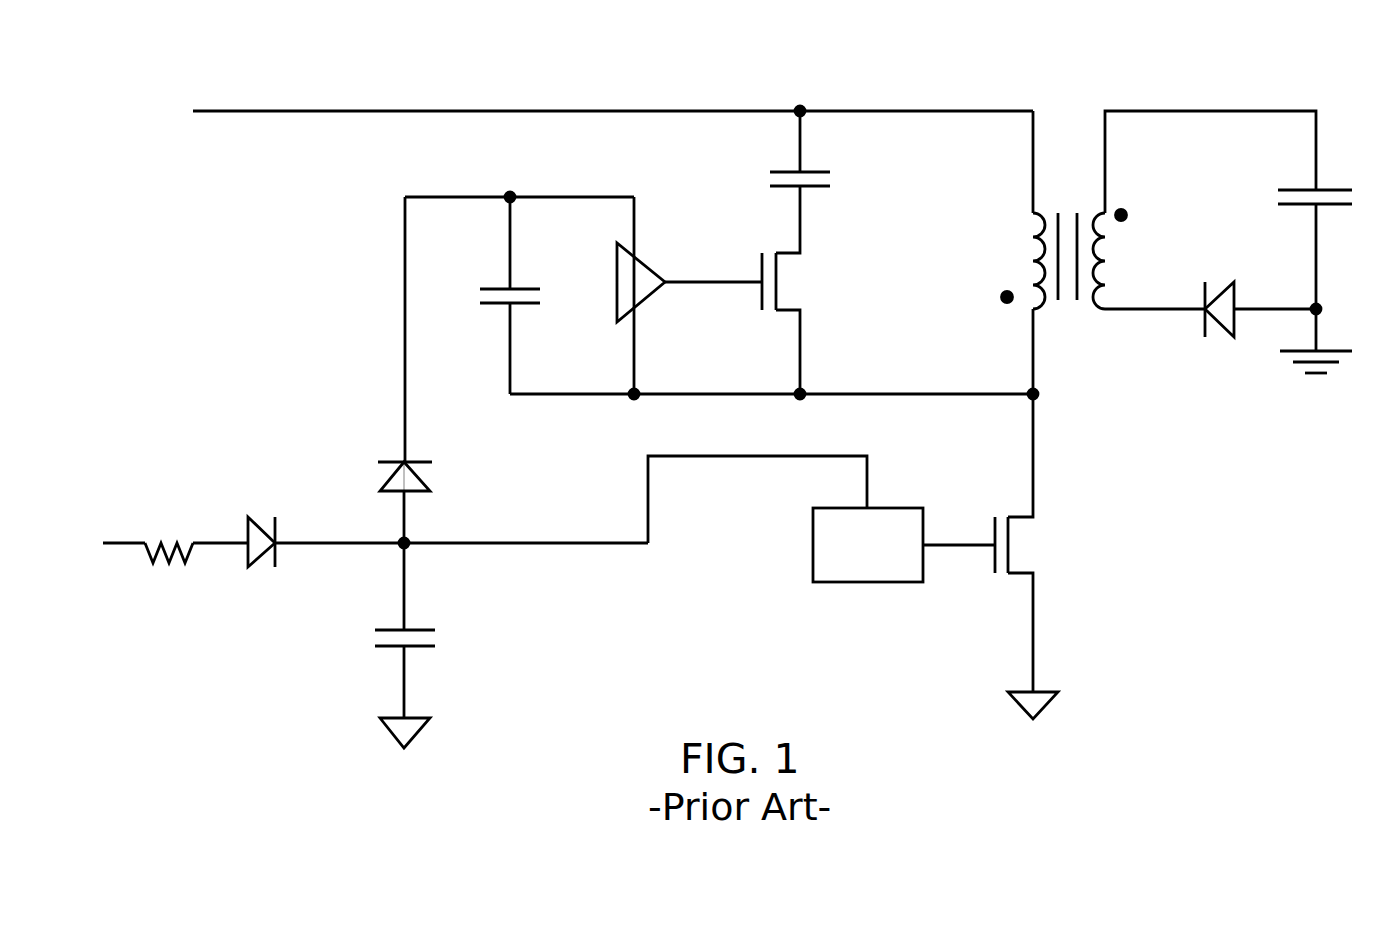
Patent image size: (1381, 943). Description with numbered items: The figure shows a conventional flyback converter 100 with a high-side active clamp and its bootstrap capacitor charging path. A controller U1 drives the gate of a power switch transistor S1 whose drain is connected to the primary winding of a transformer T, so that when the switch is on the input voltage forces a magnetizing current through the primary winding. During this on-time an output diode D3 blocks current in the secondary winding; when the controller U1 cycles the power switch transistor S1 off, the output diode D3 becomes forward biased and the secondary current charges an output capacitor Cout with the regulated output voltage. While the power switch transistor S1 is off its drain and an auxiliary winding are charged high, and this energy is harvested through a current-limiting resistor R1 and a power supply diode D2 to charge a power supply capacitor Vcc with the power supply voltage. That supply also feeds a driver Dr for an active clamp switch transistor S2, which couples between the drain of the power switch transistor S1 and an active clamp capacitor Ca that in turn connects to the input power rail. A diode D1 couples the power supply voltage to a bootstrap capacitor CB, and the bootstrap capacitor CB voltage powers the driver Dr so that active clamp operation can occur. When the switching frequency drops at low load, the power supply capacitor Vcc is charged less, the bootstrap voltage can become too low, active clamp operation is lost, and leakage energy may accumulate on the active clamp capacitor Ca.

The flyback converter 100 is at (838, 50).
The current-limiting resistor R1 is at (169, 570).
The diode D1 is at (426, 475).
The power supply diode D2 is at (259, 558).
The output diode D3 is at (1222, 326).
The power supply capacitor Vcc is at (420, 635).
The bootstrap capacitor CB is at (493, 295).
The driver Dr is at (689, 296).
The active clamp switch transistor S2 is at (805, 290).
The active clamp capacitor Ca is at (824, 163).
The transformer T is at (1064, 252).
The output capacitor Cout is at (1293, 196).
The controller U1 is at (868, 545).
The power switch transistor S1 is at (995, 562).